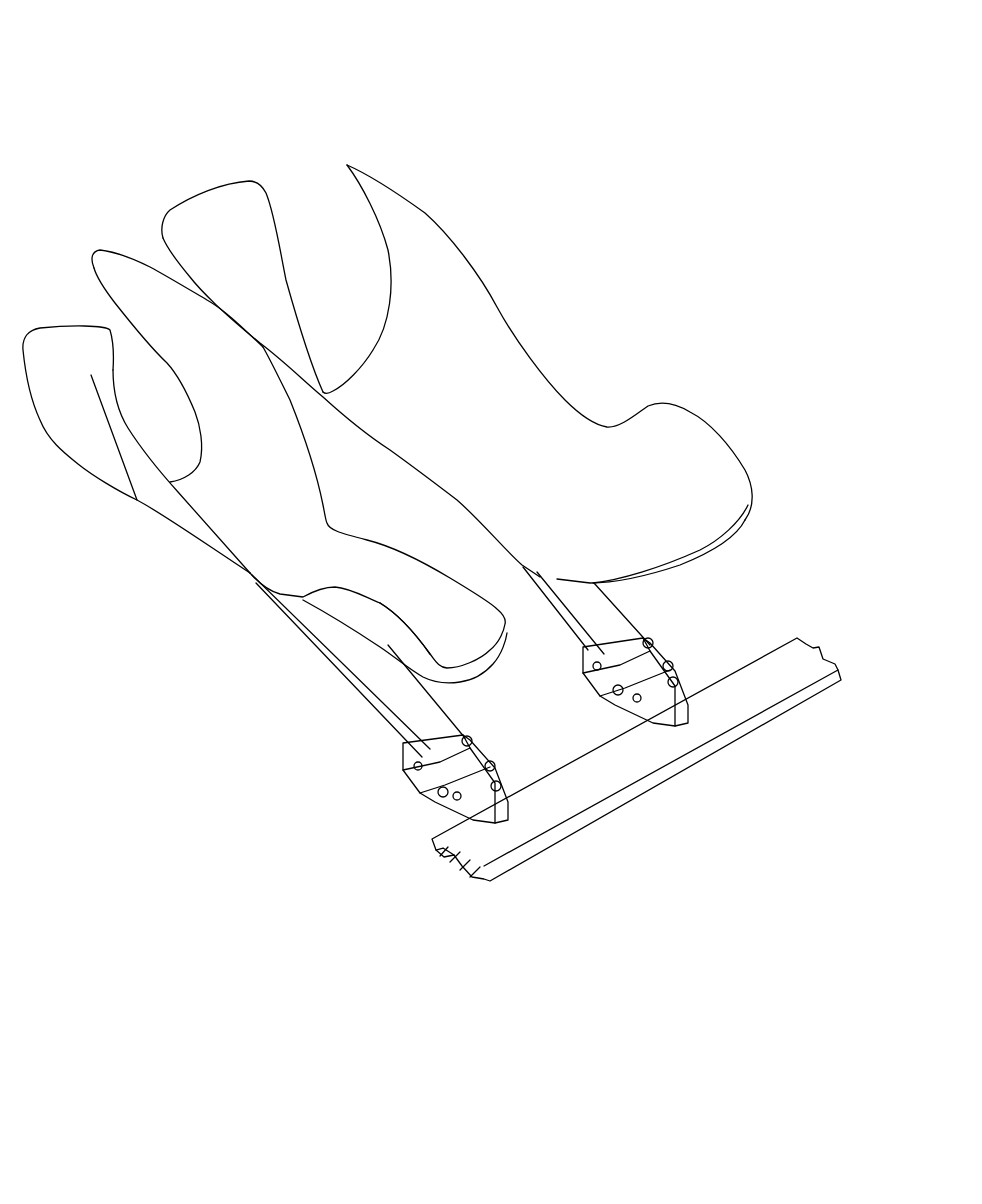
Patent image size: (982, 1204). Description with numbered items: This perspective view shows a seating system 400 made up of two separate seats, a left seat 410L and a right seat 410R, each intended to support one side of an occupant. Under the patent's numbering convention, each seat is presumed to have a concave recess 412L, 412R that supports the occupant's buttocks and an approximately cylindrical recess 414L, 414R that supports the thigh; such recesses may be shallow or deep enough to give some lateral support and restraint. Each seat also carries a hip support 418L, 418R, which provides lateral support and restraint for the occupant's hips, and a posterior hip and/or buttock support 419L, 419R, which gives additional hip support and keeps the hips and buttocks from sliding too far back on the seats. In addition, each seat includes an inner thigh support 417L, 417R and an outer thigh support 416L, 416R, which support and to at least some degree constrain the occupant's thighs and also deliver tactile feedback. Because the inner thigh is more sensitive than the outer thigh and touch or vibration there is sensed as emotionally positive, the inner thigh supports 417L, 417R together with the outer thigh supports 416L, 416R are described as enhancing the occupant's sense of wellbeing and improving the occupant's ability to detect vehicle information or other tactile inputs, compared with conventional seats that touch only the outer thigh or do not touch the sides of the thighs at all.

The seating system 400 is at (716, 90).
The left seat 410L is at (250, 573).
The right seat 410R is at (567, 400).
The concave recess 412L is at (450, 631).
The concave recess 412R is at (623, 510).
The cylindrical recess 414L is at (230, 490).
The cylindrical recess 414R is at (412, 400).
The outer thigh support 416L is at (137, 500).
The outer thigh support 416R is at (400, 193).
The inner thigh support 417L is at (118, 253).
The inner thigh support 417R is at (255, 183).
The hip support 418L is at (373, 618).
The hip support 418R is at (693, 420).
The posterior hip and/or buttock support 419L is at (476, 666).
The posterior hip and/or buttock support 419R is at (653, 562).